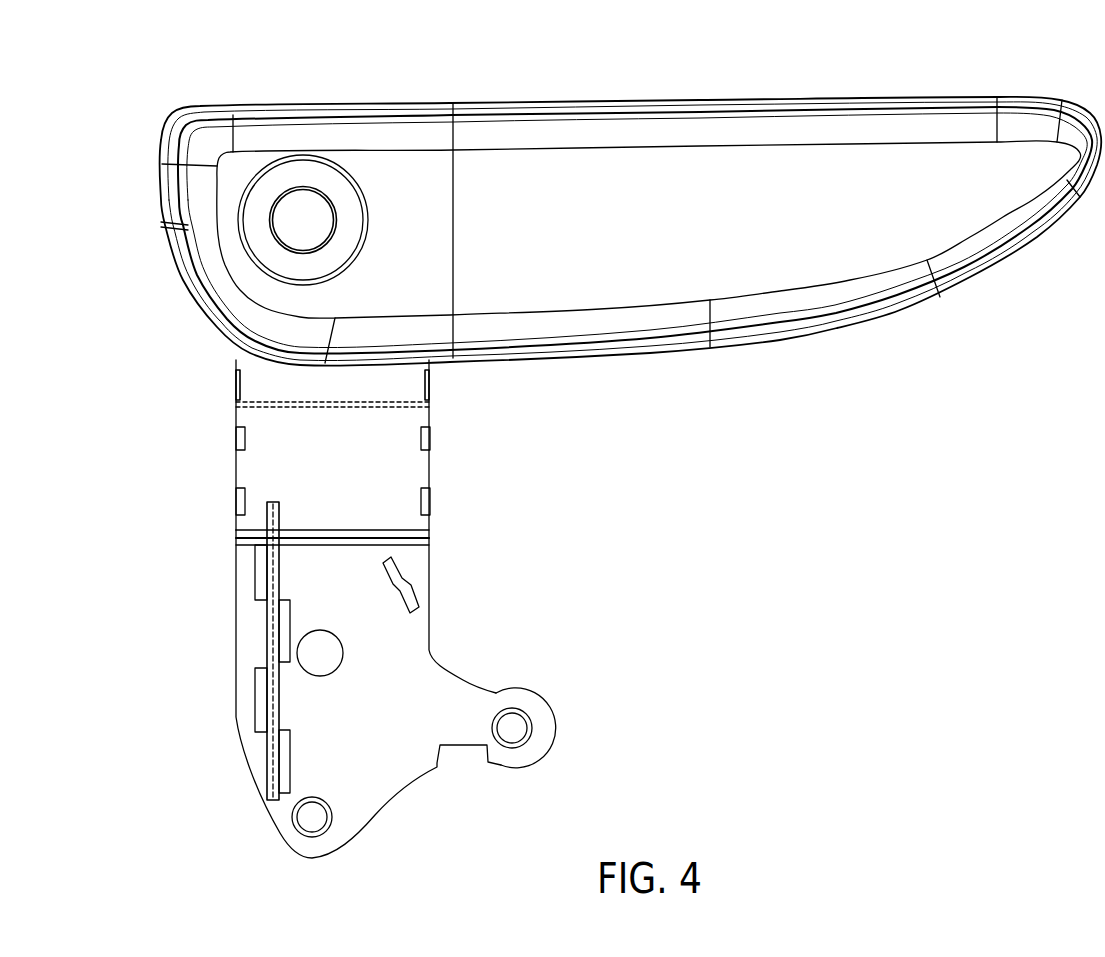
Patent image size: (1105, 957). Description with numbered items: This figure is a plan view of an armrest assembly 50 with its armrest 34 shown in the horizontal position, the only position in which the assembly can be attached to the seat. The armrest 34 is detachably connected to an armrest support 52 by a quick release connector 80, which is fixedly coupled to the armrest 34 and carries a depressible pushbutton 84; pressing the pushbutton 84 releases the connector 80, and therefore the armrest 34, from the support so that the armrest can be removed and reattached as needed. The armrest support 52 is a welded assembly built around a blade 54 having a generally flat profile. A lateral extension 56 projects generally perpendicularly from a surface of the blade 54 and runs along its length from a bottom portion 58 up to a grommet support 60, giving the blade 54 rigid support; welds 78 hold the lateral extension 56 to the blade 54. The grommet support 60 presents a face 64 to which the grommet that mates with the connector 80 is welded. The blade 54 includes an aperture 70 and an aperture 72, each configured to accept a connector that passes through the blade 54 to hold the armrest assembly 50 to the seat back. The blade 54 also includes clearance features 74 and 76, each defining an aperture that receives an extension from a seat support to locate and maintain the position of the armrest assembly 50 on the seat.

The armrest assembly 50 is at (788, 75).
The armrest 34 is at (946, 122).
The quick release connector 80 is at (333, 158).
The pushbutton 84 is at (307, 228).
The armrest support 52 is at (233, 405).
The face 64 is at (353, 392).
The grommet support 60 is at (258, 468).
The lateral extension 56 is at (273, 645).
The welds 78 is at (262, 698).
The bottom portion 58 is at (285, 845).
The aperture 70 is at (315, 818).
The blade 54 is at (478, 697).
The aperture 72 is at (518, 728).
The clearance feature 74 is at (403, 593).
The clearance feature 76 is at (322, 653).